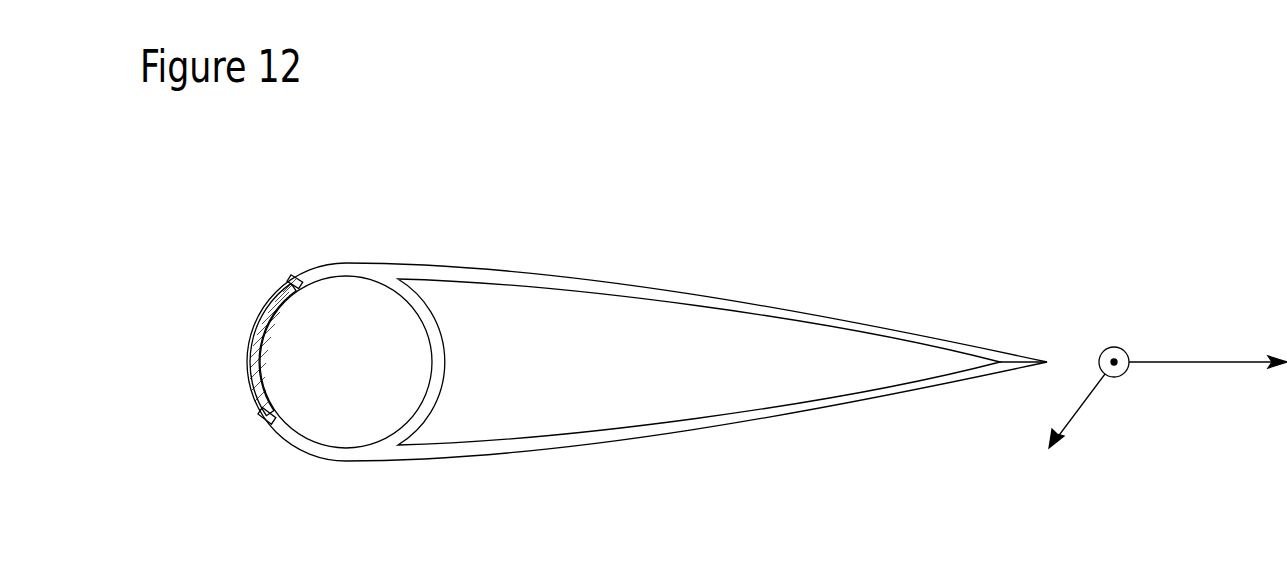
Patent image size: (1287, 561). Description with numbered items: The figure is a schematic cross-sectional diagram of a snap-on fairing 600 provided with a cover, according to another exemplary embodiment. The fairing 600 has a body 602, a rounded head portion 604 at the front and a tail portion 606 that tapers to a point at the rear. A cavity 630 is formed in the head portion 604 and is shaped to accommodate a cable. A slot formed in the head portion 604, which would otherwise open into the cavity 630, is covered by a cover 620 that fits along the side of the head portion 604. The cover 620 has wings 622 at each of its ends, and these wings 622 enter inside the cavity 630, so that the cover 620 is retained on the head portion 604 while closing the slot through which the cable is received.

The fairing 600 is at (632, 83).
The body 602 is at (625, 277).
The head portion 604 is at (341, 267).
The tail portion 606 is at (947, 338).
The cover 620 is at (249, 362).
The wings 622 is at (295, 286).
The cavity 630 is at (368, 377).